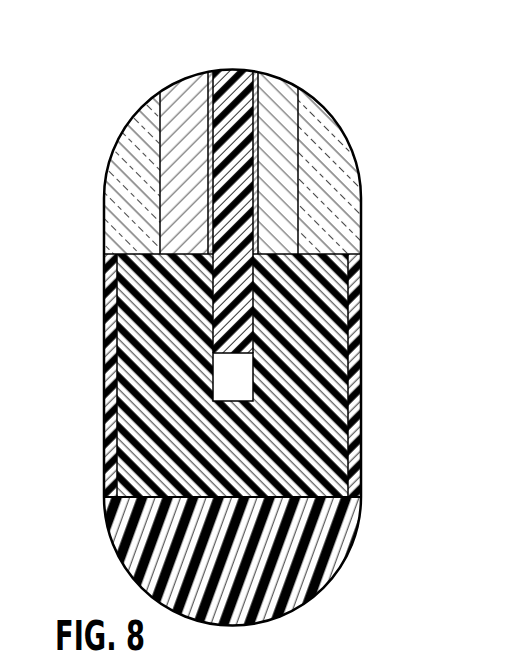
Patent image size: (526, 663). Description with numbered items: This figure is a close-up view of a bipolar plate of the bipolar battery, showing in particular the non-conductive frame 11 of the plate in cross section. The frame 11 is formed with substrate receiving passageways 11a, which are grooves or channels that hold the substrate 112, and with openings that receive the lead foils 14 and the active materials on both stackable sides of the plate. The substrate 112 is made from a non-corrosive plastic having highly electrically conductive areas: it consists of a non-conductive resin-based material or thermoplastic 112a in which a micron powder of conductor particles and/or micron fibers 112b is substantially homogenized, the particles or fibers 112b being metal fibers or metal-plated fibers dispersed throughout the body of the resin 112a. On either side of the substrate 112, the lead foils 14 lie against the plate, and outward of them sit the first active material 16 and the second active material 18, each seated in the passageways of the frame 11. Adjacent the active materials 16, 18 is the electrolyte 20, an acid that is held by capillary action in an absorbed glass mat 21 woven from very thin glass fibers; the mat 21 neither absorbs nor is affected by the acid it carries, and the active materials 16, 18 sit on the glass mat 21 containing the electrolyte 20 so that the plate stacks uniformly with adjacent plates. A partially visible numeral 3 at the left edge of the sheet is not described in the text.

The frame 11 is at (225, 348).
The substrate receiving passageways 11a is at (236, 378).
The substrate 112 is at (161, 181).
The resin-based material or thermoplastic 112a is at (223, 72).
The conductor particles or fibers 112b is at (247, 78).
The lead foils 14 is at (212, 72).
The first active material 16 is at (183, 97).
The second active material 18 is at (281, 90).
The electrolyte 20 is at (123, 158).
The glass mat 21 is at (330, 150).
The component 3 is at (5, 369).